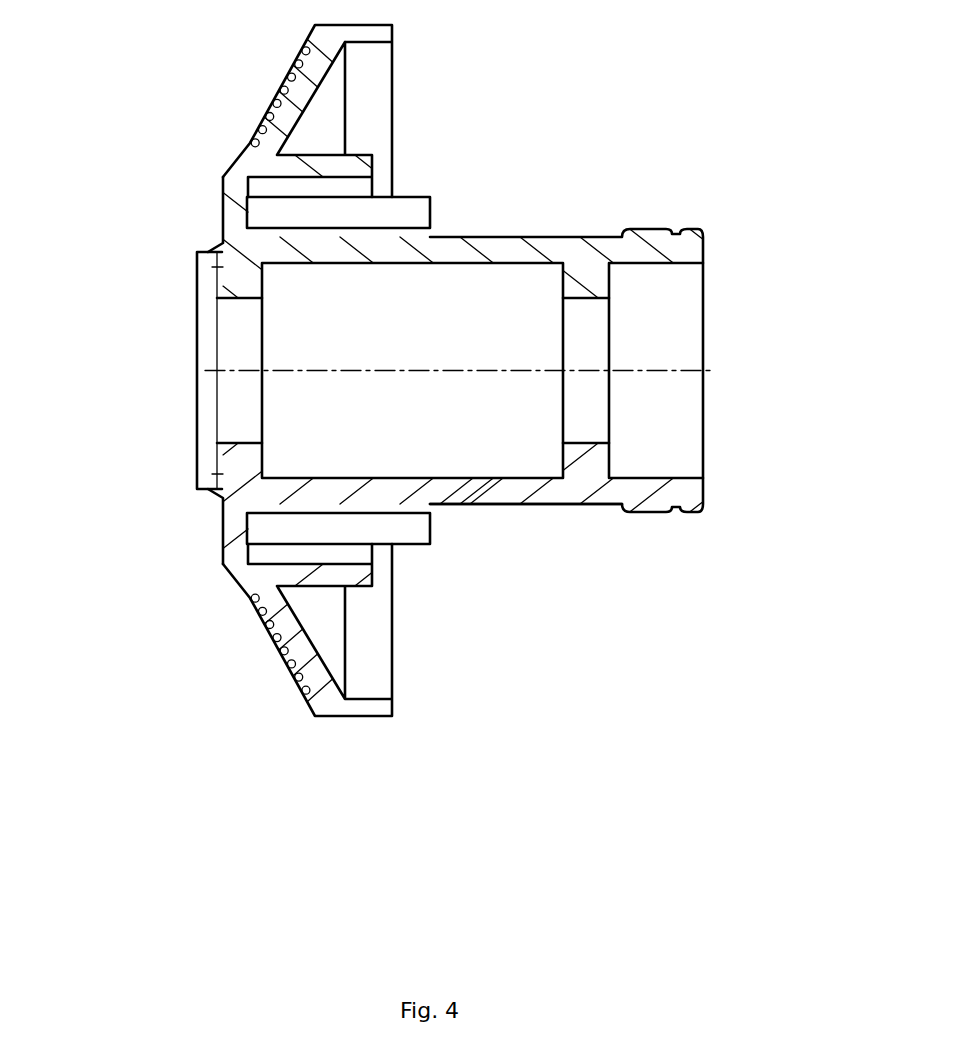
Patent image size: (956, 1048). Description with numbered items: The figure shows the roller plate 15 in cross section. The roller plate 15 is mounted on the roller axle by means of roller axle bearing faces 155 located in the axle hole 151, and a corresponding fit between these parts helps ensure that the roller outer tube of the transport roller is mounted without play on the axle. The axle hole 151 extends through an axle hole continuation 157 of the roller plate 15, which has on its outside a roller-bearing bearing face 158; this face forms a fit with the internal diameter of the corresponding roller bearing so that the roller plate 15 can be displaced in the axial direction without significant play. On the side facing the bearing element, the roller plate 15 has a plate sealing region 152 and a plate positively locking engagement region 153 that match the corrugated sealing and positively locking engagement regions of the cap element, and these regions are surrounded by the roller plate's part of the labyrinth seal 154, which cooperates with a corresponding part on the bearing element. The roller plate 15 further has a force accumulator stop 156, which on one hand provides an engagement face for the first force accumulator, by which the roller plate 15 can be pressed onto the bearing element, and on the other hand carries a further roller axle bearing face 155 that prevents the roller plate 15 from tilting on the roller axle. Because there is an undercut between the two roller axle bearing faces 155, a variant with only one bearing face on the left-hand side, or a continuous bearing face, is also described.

The roller plate 15 is at (437, 383).
The axle hole 151 is at (716, 371).
The plate sealing region 152 is at (122, 370).
The plate positively locking engagement region 153 is at (217, 282).
The labyrinth seal part 154 is at (197, 257).
The roller axle bearing face 155 is at (238, 443).
The force accumulator stop 156 is at (592, 458).
The axle hole continuation 157 is at (480, 492).
The roller-bearing bearing face 158 is at (572, 505).